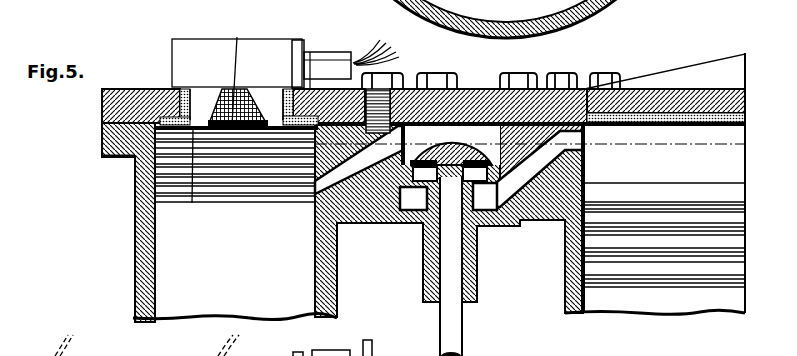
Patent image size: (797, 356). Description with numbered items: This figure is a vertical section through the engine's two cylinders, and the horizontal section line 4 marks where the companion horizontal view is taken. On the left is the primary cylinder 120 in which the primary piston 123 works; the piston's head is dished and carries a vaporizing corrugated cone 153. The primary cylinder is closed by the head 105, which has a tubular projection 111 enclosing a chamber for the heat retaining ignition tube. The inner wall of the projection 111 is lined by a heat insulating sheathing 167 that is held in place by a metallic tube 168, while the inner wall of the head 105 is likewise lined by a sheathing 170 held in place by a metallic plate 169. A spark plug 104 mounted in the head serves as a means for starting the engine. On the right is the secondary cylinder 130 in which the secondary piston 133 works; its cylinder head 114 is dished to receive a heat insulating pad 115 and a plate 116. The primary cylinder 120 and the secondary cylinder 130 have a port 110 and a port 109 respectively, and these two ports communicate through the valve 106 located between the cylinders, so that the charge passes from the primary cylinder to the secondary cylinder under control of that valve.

The section line 4— 4 is at (102, 147).
The spark plug 104 is at (345, 63).
The head 105 is at (123, 95).
The valve 106 is at (457, 150).
The port 109 is at (567, 145).
The port 110 is at (330, 192).
The tubular projection 111 is at (228, 87).
The cylinder head 114 is at (642, 90).
The pad 115 is at (678, 113).
The plate 116 is at (695, 127).
The primary cylinder 120 is at (135, 213).
The primary piston 123 is at (235, 224).
The secondary cylinder 130 is at (568, 293).
The secondary piston 133 is at (655, 183).
The vaporizing corrugated cone 153 is at (237, 70).
The heat insulating sheathing 167 is at (177, 93).
The metallic tube 168 is at (263, 100).
The metallic plate 169 is at (205, 181).
The sheathing 170 is at (303, 108).